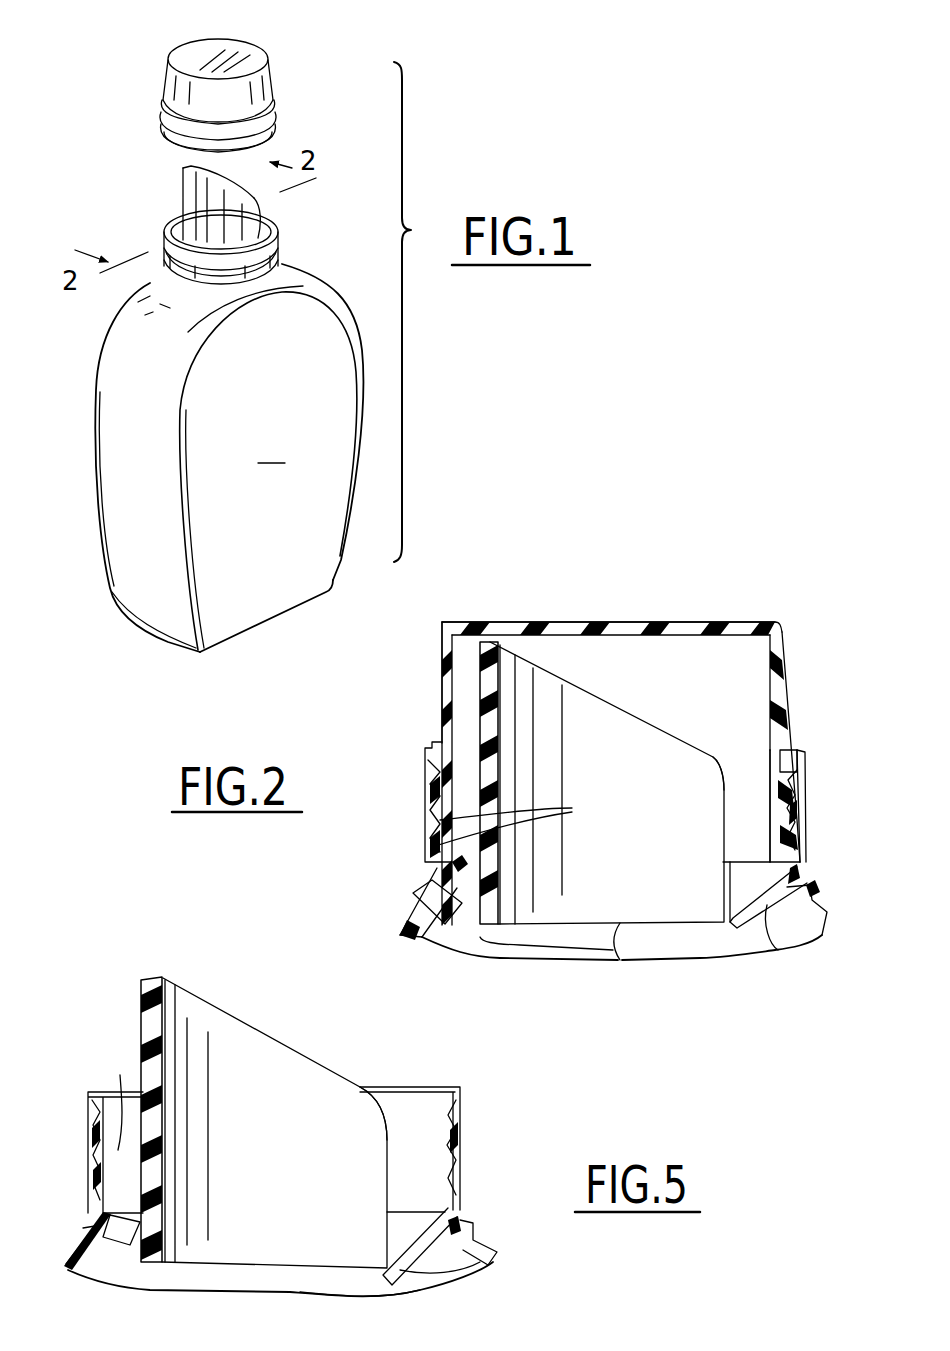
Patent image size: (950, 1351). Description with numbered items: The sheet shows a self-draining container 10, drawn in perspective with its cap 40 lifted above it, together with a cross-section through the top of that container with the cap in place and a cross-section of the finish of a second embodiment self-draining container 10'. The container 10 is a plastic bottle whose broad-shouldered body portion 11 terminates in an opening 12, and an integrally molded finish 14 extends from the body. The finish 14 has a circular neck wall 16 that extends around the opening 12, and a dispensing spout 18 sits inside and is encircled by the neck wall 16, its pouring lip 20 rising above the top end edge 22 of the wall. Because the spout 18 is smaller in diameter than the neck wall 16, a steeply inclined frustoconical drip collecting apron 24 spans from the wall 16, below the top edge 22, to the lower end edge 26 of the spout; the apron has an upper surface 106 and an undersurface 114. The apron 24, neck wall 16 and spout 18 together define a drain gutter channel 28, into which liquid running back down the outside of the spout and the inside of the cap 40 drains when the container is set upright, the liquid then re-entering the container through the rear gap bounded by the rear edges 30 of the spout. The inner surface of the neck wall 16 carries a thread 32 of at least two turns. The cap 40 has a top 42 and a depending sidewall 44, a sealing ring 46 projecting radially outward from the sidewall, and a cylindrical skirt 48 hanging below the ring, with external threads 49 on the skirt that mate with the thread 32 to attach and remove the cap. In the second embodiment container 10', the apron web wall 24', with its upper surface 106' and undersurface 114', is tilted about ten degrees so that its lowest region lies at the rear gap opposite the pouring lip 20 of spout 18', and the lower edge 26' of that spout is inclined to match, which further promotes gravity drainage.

In FIG. 1, the self-draining container 10 is at (200, 458).
In FIG. 2, the self-draining container 10 is at (561, 935).
In FIG. 5, the second embodiment self-draining container 10' is at (261, 1284).
In FIG. 1, the body portion 11 is at (247, 468).
In FIG. 2, the body portion 11 is at (410, 922).
In FIG. 5, the body portion 11 is at (90, 1267).
In FIG. 1, the opening 12 is at (170, 248).
In FIG. 1, the dispensing portion (finish) 14 is at (322, 222).
In FIG. 2, the dispensing portion (finish) 14 is at (808, 797).
In FIG. 1, the neck wall 16 is at (235, 268).
In FIG. 2, the neck wall 16 is at (428, 818).
In FIG. 5, the neck wall 16 is at (90, 1168).
In FIG. 1, the dispensing spout 18 is at (189, 202).
In FIG. 2, the dispensing spout 18 is at (607, 753).
In FIG. 5, the spout of second embodiment 18' is at (274, 1119).
In FIG. 1, the pouring lip 20 is at (205, 164).
In FIG. 2, the pouring lip 20 is at (488, 640).
In FIG. 5, the pouring lip 20 is at (153, 977).
In FIG. 1, the top end edge 22 is at (170, 220).
In FIG. 2, the top end edge 22 is at (800, 752).
In FIG. 2, the drip collecting apron 24 is at (428, 925).
In FIG. 5, the apron web wall of second embodiment 24' is at (144, 1264).
In FIG. 2, the lower end edge of spout 26 is at (574, 963).
In FIG. 5, the lower edge of second-embodiment spout 26' is at (390, 1279).
In FIG. 2, the drain gutter channel 28 is at (733, 882).
In FIG. 2, the rear edges of spout 30 is at (730, 790).
In FIG. 5, the rear edges of spout 30 is at (395, 1140).
In FIG. 2, the thread 32 is at (517, 819).
In FIG. 5, the thread 32 is at (112, 1096).
In FIG. 1, the closure (cap) 40 is at (158, 76).
In FIG. 2, the closure (cap) 40 is at (438, 652).
In FIG. 1, the cap top 42 is at (224, 58).
In FIG. 2, the cap top 42 is at (680, 622).
In FIG. 2, the sidewall 44 is at (790, 690).
In FIG. 1, the sealing ring 46 is at (160, 108).
In FIG. 2, the sealing ring 46 is at (795, 750).
In FIG. 2, the skirt 48 is at (775, 770).
In FIG. 1, the external threads 49 is at (283, 128).
In FIG. 2, the upper surface of apron web 106 is at (597, 896).
In FIG. 5, the upper surface of second-embodiment apron web 106' is at (455, 1216).
In FIG. 2, the undersurface of web 114 is at (647, 922).
In FIG. 5, the undersurface of second-embodiment web 114' is at (505, 1242).